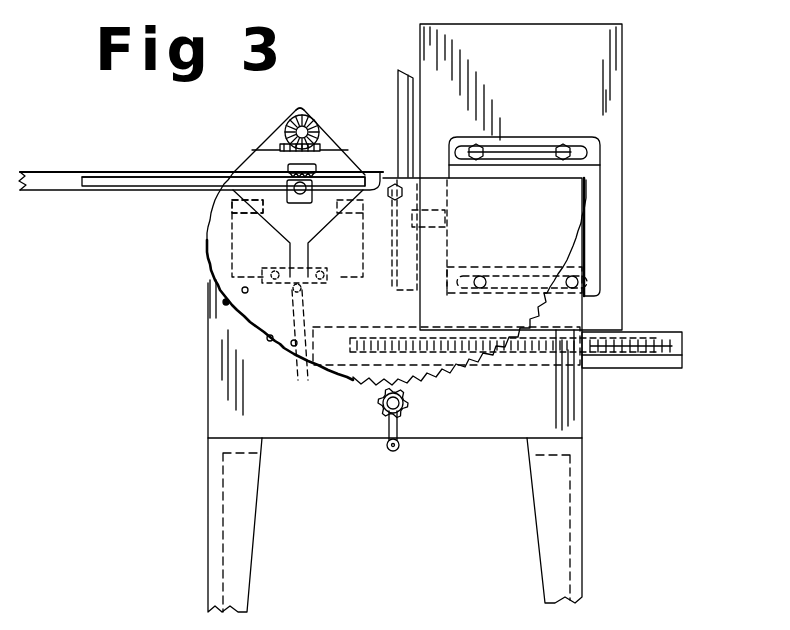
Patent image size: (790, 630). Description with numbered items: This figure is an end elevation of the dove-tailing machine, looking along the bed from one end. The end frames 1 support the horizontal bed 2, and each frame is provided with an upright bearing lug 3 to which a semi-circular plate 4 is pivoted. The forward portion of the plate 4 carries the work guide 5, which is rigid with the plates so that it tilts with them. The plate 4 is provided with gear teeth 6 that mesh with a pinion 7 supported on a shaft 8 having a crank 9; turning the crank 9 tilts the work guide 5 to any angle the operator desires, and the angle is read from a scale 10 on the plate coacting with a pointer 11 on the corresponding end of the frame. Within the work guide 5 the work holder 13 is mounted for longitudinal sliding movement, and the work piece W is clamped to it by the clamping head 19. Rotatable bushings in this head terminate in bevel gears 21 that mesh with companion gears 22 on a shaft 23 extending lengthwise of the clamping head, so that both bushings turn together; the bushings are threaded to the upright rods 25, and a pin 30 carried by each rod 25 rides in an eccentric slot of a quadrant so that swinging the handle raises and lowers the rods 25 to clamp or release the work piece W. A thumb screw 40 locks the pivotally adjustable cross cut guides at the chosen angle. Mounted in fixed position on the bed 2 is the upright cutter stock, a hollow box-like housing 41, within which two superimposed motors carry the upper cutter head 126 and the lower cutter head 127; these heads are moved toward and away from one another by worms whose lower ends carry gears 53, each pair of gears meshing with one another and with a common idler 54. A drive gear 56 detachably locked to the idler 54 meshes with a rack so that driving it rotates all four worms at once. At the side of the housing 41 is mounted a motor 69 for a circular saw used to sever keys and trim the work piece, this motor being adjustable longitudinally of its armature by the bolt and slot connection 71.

The end frames 1 is at (583, 437).
The horizontal bed 2 is at (645, 332).
The upright bearing lugs 3 is at (392, 184).
The semi-circular plates 4 is at (210, 253).
The work guide 5 is at (232, 228).
The gear teeth 6 is at (455, 375).
The pinions 7 is at (410, 414).
The shaft 8 is at (378, 404).
The crank 9 is at (385, 425).
The scale 10 is at (210, 303).
The pointer 11 is at (226, 302).
The work holder 13 is at (297, 236).
The clamping head 19 is at (260, 145).
The bevel gear 21 is at (320, 147).
The companion gears 22 is at (290, 124).
The shaft 23 is at (312, 111).
The upright rods 25 is at (247, 182).
The pin 30 is at (310, 340).
The thumb screw 40 is at (317, 167).
The housing 41 is at (612, 100).
The gear 53 is at (665, 368).
The idler 54 is at (363, 330).
The drive gear 56 is at (430, 382).
The motor 69 is at (592, 177).
The bolt and slot connection 71 is at (520, 150).
The cutter head 126 is at (403, 102).
The cutter head 127 is at (387, 240).
The work piece W is at (50, 172).